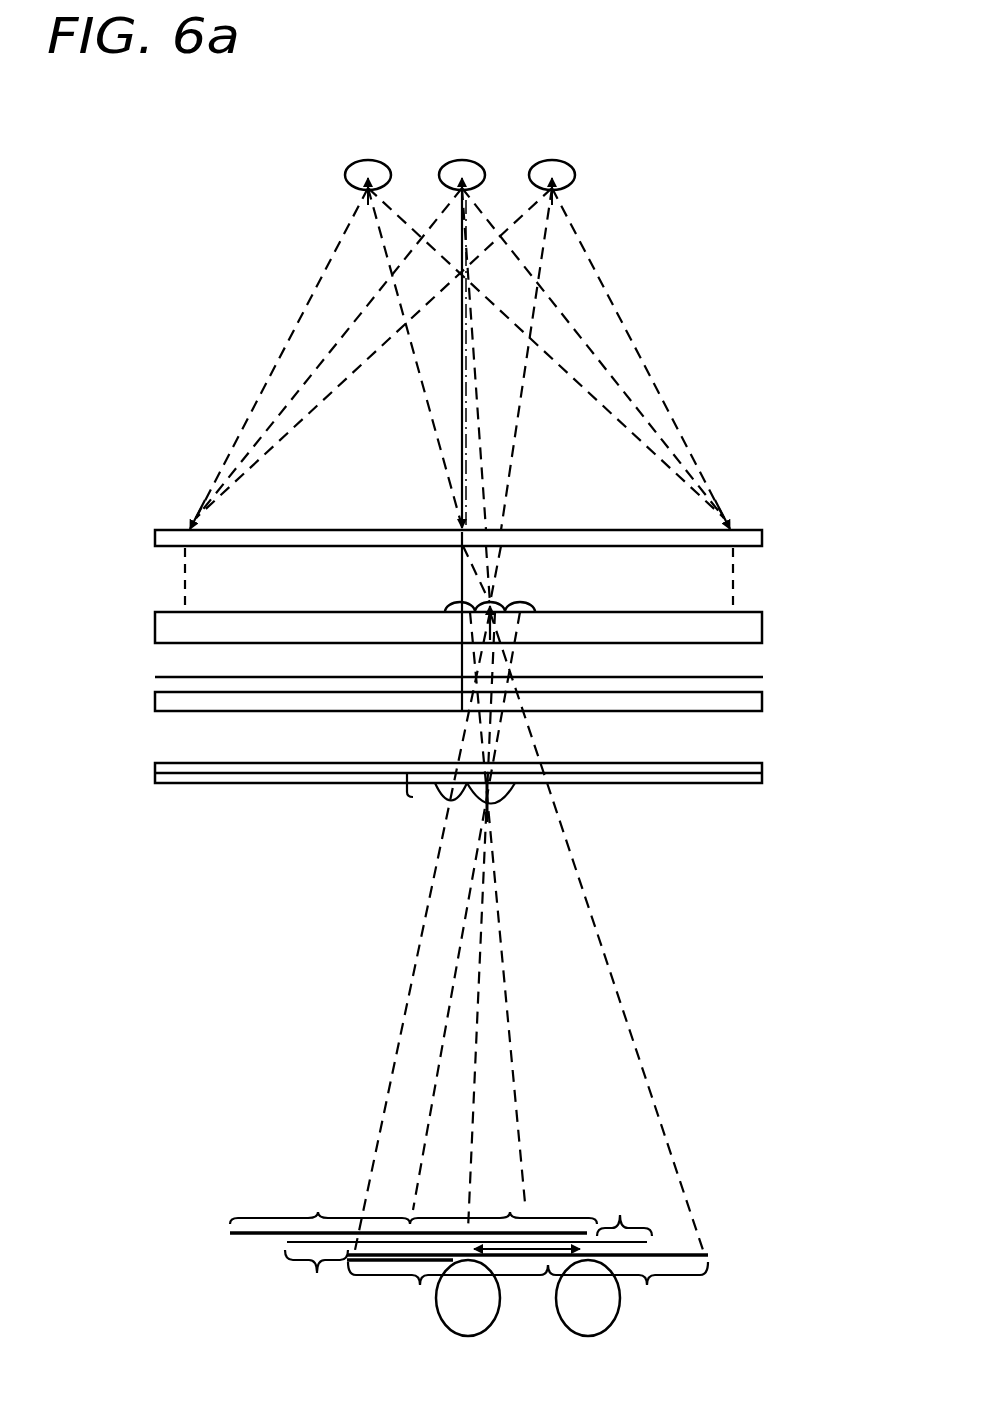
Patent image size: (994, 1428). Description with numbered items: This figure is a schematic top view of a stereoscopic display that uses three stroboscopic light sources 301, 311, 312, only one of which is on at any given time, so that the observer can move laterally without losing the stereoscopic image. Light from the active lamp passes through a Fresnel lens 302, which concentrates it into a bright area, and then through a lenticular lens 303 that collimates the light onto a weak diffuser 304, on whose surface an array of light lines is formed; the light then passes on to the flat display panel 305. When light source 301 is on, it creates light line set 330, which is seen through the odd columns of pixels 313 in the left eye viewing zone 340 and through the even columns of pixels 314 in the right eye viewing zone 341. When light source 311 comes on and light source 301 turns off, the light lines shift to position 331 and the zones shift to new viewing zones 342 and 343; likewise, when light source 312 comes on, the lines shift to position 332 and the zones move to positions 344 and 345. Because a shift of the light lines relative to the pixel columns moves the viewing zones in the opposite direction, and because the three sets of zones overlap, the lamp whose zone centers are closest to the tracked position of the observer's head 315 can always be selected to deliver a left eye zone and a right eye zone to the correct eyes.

The light source 301 is at (352, 166).
The light source 311 is at (455, 162).
The light source 312 is at (568, 162).
The Fresnel lens 302 is at (760, 530).
The lenticular lens 303 is at (760, 612).
The weak diffuser 304 is at (755, 677).
The flat display panel 305 is at (762, 763).
The light line set 330 is at (517, 680).
The light line position 331 is at (490, 680).
The light line position 332 is at (478, 668).
The odd columns of pixels 313 is at (487, 812).
The even columns of pixels 314 is at (502, 783).
The left eye viewing zone 340 is at (320, 1200).
The right eye viewing zone 341 is at (503, 1200).
The viewing zone 342 is at (316, 1281).
The viewing zone 343 is at (622, 1206).
The viewing zone 344 is at (448, 1287).
The viewing zone 345 is at (628, 1287).
The observer's head 315 is at (557, 1352).